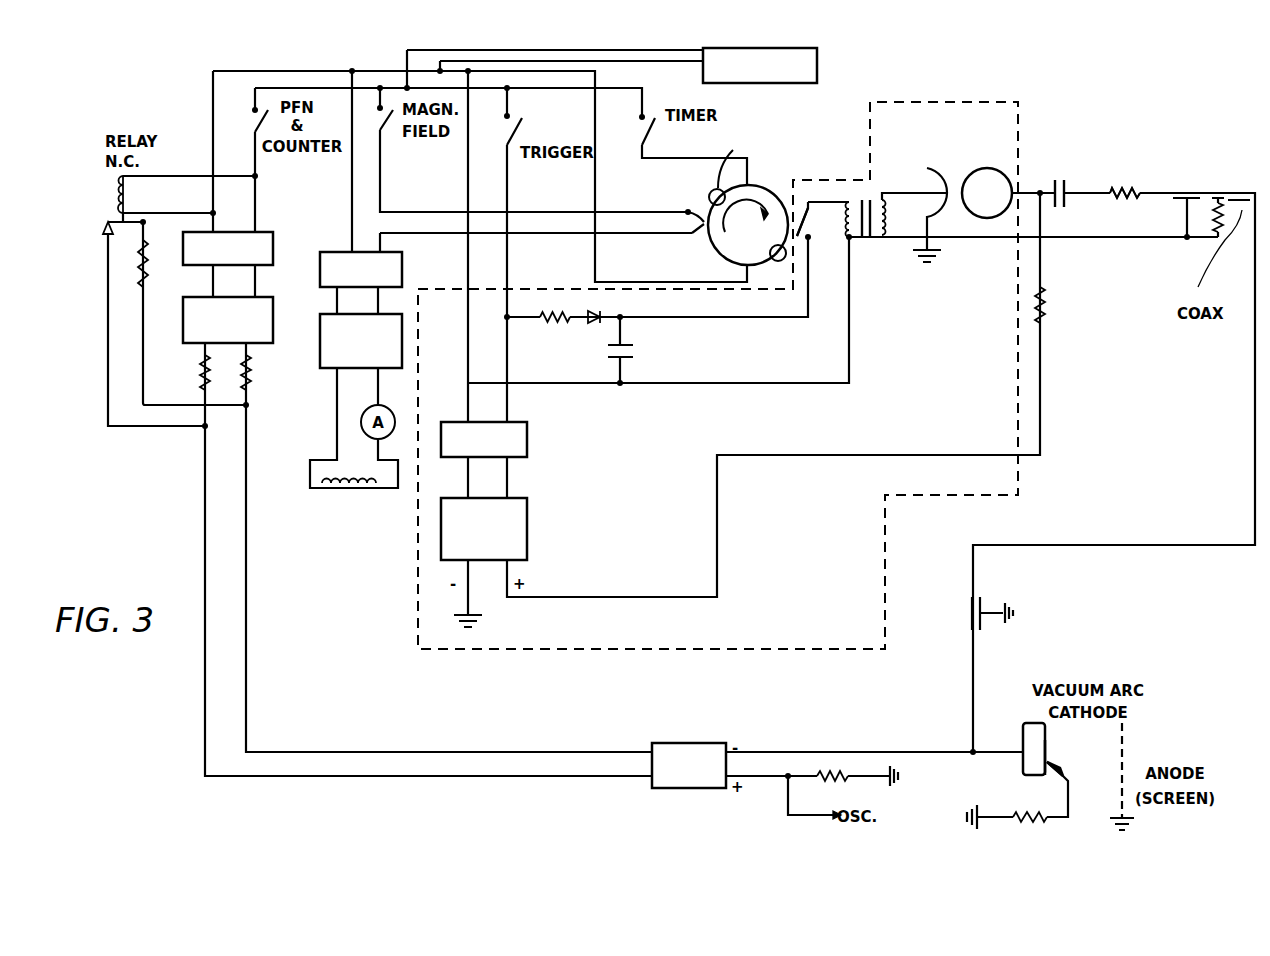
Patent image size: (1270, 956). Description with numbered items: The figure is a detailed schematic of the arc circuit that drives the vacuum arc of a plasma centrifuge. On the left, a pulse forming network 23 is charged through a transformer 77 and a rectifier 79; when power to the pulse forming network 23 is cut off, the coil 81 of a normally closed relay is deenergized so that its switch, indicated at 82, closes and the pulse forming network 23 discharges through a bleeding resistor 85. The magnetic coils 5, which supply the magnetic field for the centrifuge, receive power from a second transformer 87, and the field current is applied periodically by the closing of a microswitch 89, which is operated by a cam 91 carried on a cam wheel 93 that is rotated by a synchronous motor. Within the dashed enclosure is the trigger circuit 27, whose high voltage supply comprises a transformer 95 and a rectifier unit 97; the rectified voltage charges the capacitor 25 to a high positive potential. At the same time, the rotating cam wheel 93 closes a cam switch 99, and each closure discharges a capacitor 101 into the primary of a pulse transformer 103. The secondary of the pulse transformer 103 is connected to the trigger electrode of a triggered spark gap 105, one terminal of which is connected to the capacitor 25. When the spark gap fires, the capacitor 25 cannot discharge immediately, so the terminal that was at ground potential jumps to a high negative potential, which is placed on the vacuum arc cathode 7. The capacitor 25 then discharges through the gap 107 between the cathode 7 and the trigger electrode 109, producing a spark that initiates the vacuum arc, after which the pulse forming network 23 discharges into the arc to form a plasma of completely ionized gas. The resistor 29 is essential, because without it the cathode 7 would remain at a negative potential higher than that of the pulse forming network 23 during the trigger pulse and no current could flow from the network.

The magnetic coils 5 is at (800, 83).
The cathode 7 is at (1023, 735).
The pulse forming network 23 is at (700, 742).
The capacitor 25 is at (1068, 188).
The trigger circuit 27 is at (875, 102).
The resistor 29 is at (1142, 192).
The transformer 77 is at (273, 252).
The rectifier 79 is at (273, 330).
The coil 81 is at (117, 198).
The relay contact 82 is at (105, 236).
The bleeding resistor 85 is at (150, 250).
The transformer 87 is at (402, 268).
The microswitch 89 is at (688, 212).
The cam 91 is at (720, 160).
The cam wheel 93 is at (735, 258).
The transformer 95 is at (527, 440).
The rectifier unit 97 is at (527, 522).
The cam switch 99 is at (818, 222).
The capacitor 101 is at (622, 333).
The pulse transformer 103 is at (855, 238).
The triggered spark gap 105 is at (953, 208).
The gap 107 is at (1050, 760).
The trigger electrode 109 is at (1065, 778).